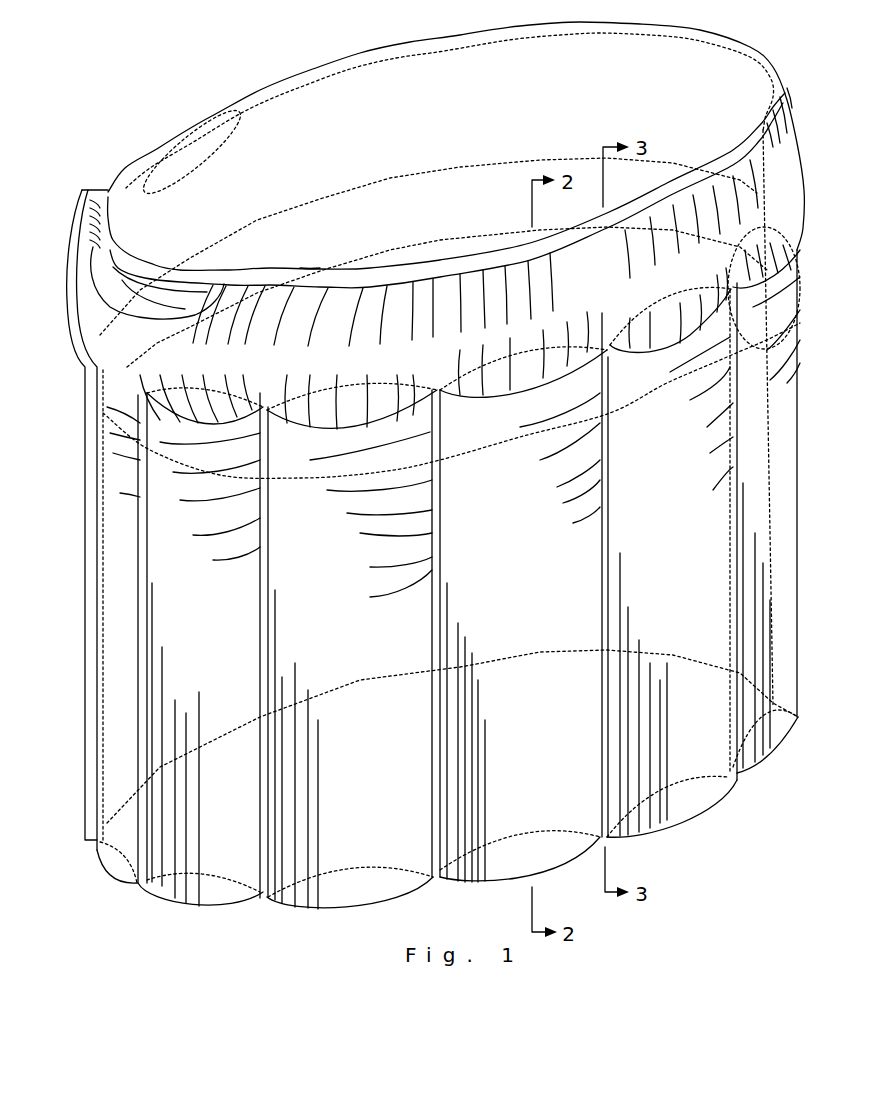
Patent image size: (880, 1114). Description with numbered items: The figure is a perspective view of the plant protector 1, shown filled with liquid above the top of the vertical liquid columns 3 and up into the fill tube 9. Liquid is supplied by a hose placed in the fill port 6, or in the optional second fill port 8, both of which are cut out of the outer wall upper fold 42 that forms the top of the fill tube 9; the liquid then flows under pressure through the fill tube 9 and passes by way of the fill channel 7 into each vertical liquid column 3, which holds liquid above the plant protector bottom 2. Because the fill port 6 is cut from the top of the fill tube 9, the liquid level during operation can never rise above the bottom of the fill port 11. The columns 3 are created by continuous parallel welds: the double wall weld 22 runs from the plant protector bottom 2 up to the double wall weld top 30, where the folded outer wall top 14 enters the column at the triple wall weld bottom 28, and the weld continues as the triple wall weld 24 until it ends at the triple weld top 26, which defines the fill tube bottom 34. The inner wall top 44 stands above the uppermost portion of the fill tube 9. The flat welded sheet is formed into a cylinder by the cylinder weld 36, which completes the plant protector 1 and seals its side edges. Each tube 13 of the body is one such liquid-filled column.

The plant protector 1 is at (343, 117).
The plant protector bottom 2 is at (215, 910).
The vertical liquid column 3 is at (269, 509).
The fill port 6 is at (103, 263).
The fill channel 7 is at (520, 373).
The second fill port 8 is at (205, 153).
The fill tube 9 is at (640, 290).
The bottom of the fill port 11 is at (491, 110).
The tube 13 is at (691, 503).
The outer wall top 14 is at (638, 402).
The double wall weld 22 is at (440, 507).
The triple wall weld 24 is at (440, 413).
The triple weld top 26 is at (611, 353).
The triple wall weld bottom 28 is at (440, 460).
The double wall weld top 30 is at (610, 413).
The fill tube bottom 34 is at (270, 422).
The cylinder weld 36 is at (95, 190).
The outer wall upper fold 42 is at (607, 229).
The inner wall top 44 is at (405, 46).